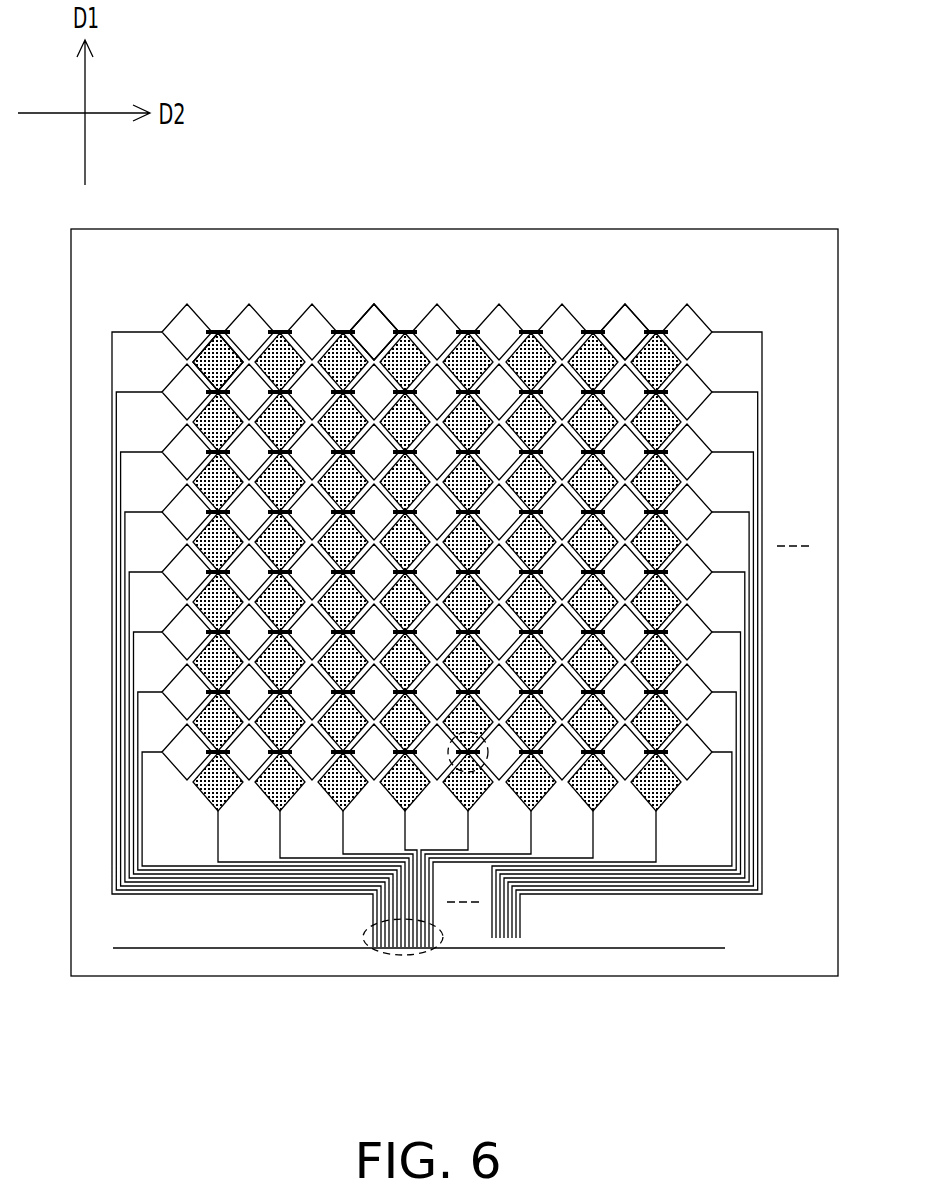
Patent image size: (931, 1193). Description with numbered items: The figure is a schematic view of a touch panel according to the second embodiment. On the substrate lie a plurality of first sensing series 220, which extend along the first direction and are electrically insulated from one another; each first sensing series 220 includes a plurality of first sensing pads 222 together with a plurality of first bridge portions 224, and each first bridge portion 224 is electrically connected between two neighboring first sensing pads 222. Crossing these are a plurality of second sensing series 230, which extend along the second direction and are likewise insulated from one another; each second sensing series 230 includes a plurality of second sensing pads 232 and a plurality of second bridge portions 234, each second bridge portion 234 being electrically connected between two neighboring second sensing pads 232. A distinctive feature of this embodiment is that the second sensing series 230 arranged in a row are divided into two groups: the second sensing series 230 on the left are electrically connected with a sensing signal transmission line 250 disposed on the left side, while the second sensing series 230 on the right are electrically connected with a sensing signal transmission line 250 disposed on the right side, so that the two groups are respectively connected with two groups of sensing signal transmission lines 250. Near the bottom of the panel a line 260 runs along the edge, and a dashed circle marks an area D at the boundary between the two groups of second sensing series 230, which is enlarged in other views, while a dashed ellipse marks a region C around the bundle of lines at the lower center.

The first sensing series 220 is at (188, 170).
The first sensing pad 222 is at (238, 352).
The first bridge portion 224 is at (220, 331).
The second sensing series 230 is at (450, 170).
The second sensing pad 232 is at (380, 326).
The second bridge portion 234 is at (410, 330).
The sensing signal transmission line 250 is at (203, 895).
The bonding line / edge 260 is at (608, 949).
The region C is at (423, 955).
The area D is at (483, 767).